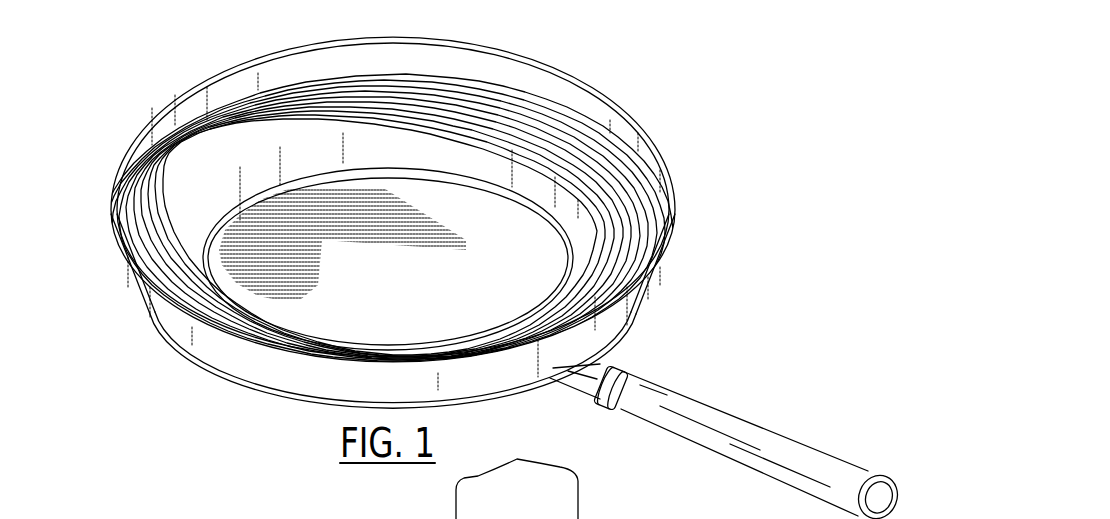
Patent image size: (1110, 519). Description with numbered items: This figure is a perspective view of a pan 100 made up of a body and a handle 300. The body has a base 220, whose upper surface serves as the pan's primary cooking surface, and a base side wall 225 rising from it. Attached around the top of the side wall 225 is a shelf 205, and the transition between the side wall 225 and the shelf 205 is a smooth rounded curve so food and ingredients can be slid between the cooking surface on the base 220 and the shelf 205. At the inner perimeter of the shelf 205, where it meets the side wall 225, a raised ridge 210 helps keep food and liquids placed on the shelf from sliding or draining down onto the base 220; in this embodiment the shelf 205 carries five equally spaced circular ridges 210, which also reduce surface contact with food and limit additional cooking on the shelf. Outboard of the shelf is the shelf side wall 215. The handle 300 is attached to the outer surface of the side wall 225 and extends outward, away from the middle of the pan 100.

The pan 100 is at (98, 36).
The shelf 205 is at (622, 175).
The ridge 210 is at (633, 193).
The shelf side wall 215 is at (518, 74).
The base 220 is at (417, 284).
The base side wall 225 is at (417, 160).
The handle 300 is at (751, 436).